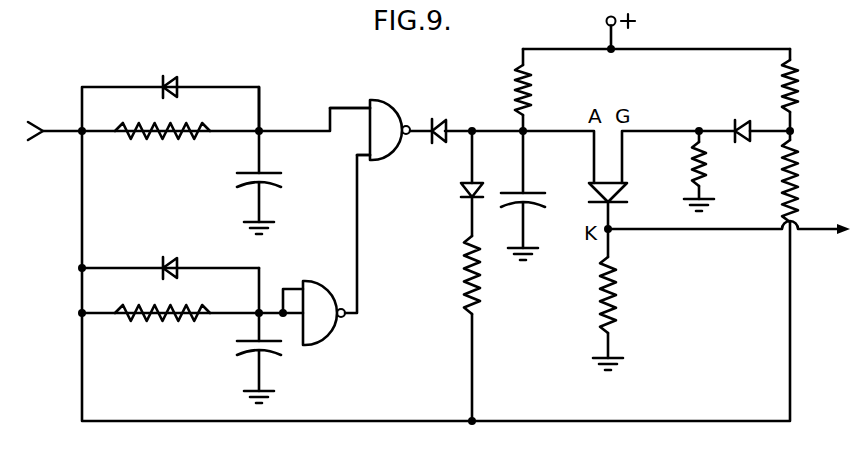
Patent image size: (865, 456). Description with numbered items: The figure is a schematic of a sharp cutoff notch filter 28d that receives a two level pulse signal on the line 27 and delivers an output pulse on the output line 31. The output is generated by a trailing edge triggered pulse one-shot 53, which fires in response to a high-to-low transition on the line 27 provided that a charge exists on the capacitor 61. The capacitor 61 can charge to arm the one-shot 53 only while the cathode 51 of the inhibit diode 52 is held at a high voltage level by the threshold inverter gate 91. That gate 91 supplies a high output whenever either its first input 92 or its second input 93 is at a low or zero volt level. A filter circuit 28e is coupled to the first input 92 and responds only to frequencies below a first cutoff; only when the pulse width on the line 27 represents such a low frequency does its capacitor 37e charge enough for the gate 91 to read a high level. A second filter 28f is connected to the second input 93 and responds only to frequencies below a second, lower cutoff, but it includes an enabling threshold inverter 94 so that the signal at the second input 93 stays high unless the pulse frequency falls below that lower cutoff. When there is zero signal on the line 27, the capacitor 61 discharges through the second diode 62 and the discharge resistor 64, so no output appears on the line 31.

The line 27 is at (54, 128).
The filter circuit 28e is at (141, 74).
The capacitor 37e is at (271, 177).
The notch filter 28d is at (385, 122).
The threshold inverter gate 91 is at (381, 104).
The first input 92 is at (369, 109).
The second input 93 is at (362, 160).
The cathode 51 is at (430, 125).
The inhibit diode 52 is at (446, 124).
The second diode 62 is at (480, 187).
The capacitor 61 is at (528, 192).
The pulse one-shot 53 is at (581, 30).
The discharge resistor 64 is at (480, 269).
The second filter 28f is at (223, 335).
The enabling threshold inverter 94 is at (322, 318).
The output line 31 is at (812, 234).